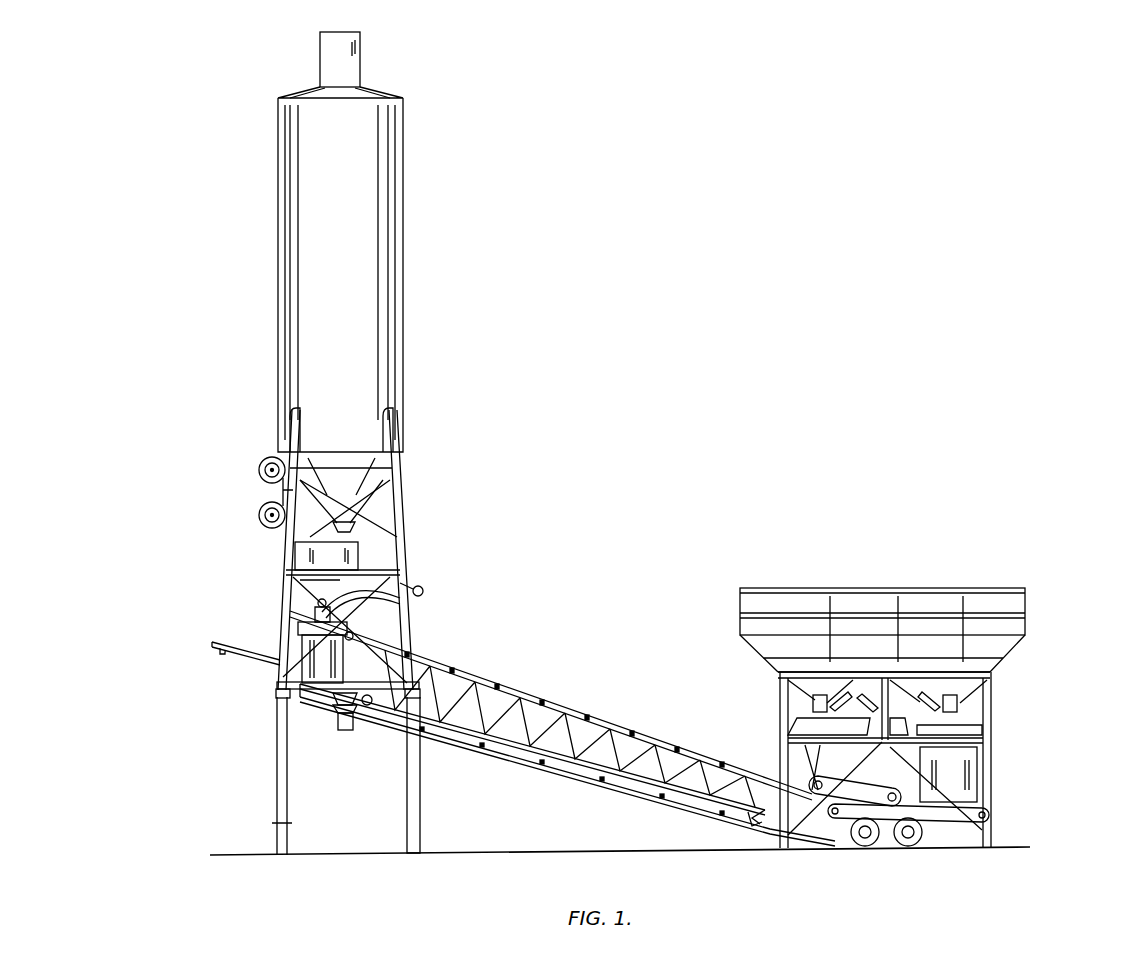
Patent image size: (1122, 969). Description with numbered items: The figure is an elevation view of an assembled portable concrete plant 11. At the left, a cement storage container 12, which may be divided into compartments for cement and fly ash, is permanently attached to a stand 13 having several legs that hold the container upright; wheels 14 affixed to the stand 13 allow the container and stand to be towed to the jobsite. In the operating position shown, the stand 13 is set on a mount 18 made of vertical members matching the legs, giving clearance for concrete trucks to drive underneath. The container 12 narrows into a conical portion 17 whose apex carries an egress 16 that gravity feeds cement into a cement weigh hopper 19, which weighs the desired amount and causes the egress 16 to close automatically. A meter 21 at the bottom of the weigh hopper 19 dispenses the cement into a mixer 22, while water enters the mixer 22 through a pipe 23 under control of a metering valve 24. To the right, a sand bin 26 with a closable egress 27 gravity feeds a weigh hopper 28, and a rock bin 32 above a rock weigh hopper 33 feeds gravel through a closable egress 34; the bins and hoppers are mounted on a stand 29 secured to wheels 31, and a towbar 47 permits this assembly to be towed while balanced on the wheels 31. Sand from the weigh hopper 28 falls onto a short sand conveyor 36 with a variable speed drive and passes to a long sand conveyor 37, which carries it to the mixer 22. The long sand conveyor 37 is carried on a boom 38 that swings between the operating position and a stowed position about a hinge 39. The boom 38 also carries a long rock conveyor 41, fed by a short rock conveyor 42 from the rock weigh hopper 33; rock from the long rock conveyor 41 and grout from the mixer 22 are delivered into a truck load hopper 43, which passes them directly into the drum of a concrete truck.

The concrete plant 11 is at (578, 845).
The cement storage container 12 is at (352, 343).
The stand 13 is at (410, 626).
The wheels 14 is at (261, 500).
The egress 16 is at (352, 522).
The conical portion 17 is at (355, 498).
The mount 18 is at (277, 810).
The cement weigh hopper 19 is at (362, 548).
The meter 21 is at (318, 607).
The mixer 22 is at (302, 645).
The pipe 23 is at (406, 588).
The metering valve 24 is at (424, 590).
The sand bin 26 is at (755, 604).
The closable egress 27 is at (800, 705).
The weigh hopper 28 is at (805, 725).
The stand 29 is at (790, 760).
The wheels 31 is at (912, 845).
The rock bin 32 is at (1028, 598).
The rock weigh hopper 33 is at (988, 760).
The closable egress 34 is at (990, 708).
The short sand conveyor 36 is at (835, 795).
The long sand conveyor 37 is at (540, 690).
The boom 38 is at (520, 757).
The hinge 39 is at (752, 818).
The long rock conveyor 41 is at (602, 778).
The short rock conveyor 42 is at (990, 797).
The truck load hopper 43 is at (338, 728).
The towbar 47 is at (253, 663).